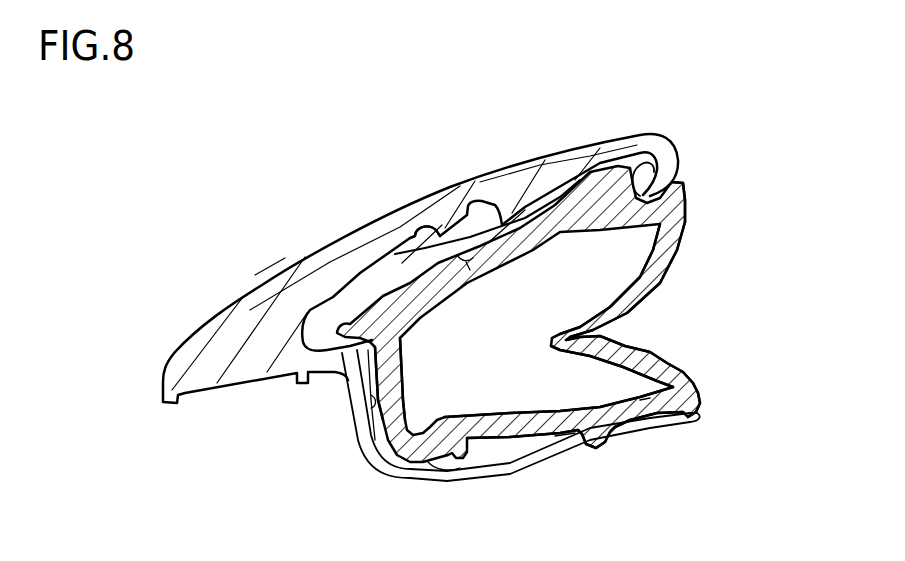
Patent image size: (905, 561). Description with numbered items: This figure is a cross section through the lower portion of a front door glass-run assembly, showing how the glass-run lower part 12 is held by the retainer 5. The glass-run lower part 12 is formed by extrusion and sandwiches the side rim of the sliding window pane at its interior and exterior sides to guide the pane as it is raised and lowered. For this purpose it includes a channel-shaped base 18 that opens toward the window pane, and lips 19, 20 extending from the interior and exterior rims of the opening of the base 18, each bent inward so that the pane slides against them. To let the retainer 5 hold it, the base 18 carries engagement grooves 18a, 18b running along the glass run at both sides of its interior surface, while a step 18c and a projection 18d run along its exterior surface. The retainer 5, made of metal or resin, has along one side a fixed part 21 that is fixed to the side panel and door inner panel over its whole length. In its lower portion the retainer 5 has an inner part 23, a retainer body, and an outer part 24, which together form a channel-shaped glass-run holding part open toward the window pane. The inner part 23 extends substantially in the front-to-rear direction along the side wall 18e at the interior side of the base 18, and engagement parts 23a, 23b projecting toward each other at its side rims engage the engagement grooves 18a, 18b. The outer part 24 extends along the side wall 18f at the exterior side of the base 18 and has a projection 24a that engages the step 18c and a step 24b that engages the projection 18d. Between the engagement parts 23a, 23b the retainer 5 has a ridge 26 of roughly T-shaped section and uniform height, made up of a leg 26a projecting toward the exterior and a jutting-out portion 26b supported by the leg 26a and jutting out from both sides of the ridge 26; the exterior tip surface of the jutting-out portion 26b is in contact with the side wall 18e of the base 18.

The retainer 5 is at (270, 272).
The glass-run lower part 12 is at (360, 413).
The base 18 is at (437, 460).
The engagement groove 18a is at (650, 200).
The engagement groove 18b is at (370, 378).
The step 18c is at (463, 458).
The projection 18d is at (565, 440).
The side wall 18e is at (537, 225).
The side wall 18f is at (643, 402).
The lip 19 is at (645, 283).
The lip 20 is at (686, 360).
The fixed part 21 is at (208, 333).
The inner part 23 is at (480, 187).
The engagement part 23a is at (685, 217).
The engagement part 23b is at (390, 358).
The outer part 24 is at (577, 442).
The projection 24a is at (478, 445).
The step 24b is at (592, 405).
The ridge 26 is at (479, 262).
The leg 26a is at (420, 240).
The jutting-out portion 26b is at (500, 250).